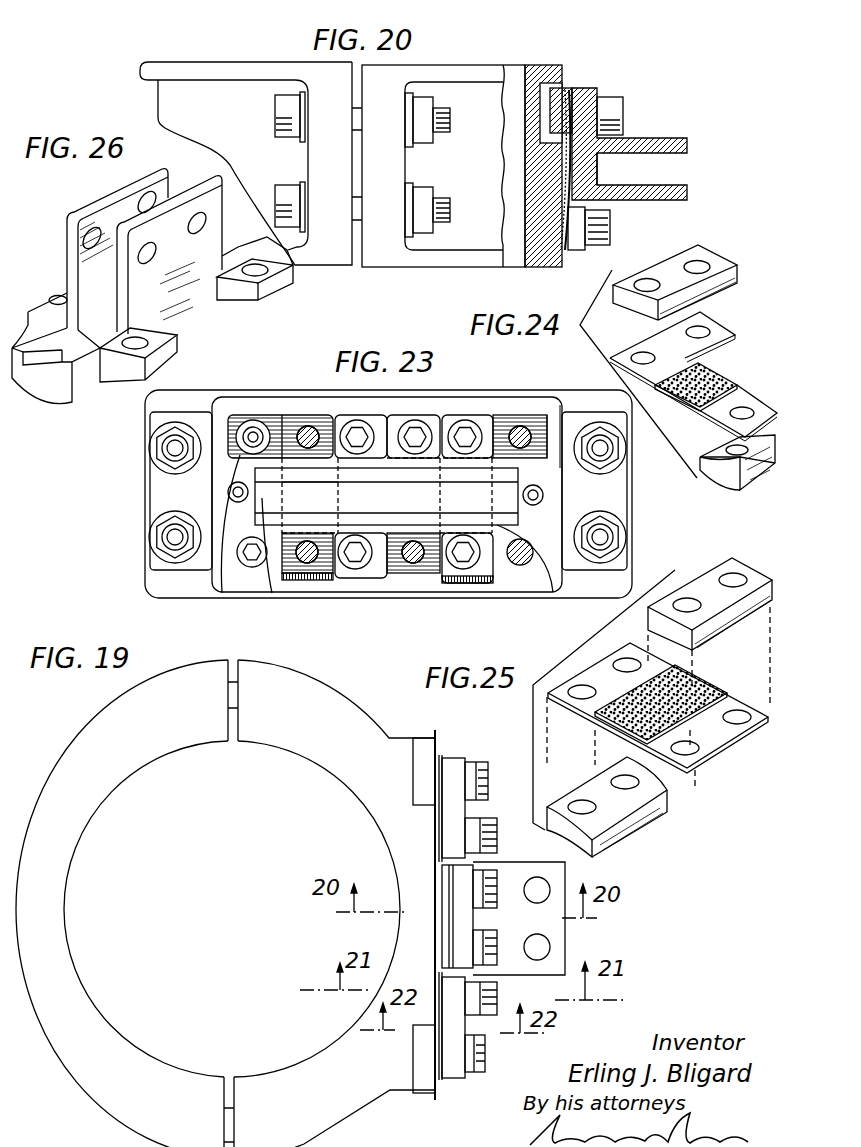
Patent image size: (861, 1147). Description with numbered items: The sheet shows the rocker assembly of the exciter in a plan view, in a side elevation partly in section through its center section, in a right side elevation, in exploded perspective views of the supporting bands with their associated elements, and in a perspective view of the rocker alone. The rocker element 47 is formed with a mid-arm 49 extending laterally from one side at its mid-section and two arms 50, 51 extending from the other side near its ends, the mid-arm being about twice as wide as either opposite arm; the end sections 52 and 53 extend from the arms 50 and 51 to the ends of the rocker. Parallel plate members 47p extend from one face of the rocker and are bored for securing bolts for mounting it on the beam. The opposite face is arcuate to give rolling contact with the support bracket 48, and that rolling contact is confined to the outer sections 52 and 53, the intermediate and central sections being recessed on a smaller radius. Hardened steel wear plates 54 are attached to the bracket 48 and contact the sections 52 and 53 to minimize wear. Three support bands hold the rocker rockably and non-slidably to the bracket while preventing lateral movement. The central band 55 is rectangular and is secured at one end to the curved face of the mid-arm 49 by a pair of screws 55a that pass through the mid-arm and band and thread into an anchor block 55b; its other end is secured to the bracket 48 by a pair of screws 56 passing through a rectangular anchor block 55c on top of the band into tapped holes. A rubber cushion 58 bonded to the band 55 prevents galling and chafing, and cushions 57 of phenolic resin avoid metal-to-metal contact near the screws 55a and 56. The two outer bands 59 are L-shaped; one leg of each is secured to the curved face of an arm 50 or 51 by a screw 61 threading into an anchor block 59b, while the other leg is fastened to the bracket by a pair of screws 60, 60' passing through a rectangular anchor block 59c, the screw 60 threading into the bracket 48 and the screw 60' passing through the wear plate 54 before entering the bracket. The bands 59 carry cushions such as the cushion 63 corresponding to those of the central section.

In FIG. 26, the rocker element 47 is at (121, 251).
In FIG. 23, the rocker element 47 is at (386, 495).
In FIG. 26, the parallel plate members 47p is at (133, 215).
In FIG. 20, the support bracket 48 is at (458, 66).
In FIG. 23, the support bracket 48 is at (152, 584).
In FIG. 19, the support bracket 48 is at (372, 740).
In FIG. 20, the mid-arm 49 is at (600, 90).
In FIG. 26, the mid-arm 49 is at (45, 298).
In FIG. 23, the mid-arm 49 is at (380, 462).
In FIG. 19, the mid-arm 49 is at (460, 886).
In FIG. 26, the arm 50 is at (177, 347).
In FIG. 23, the arm 50 is at (272, 593).
In FIG. 26, the arm 51 is at (270, 288).
In FIG. 23, the arm 51 is at (483, 572).
In FIG. 26, the end section 52 is at (86, 394).
In FIG. 23, the end section 52 is at (223, 593).
In FIG. 26, the end section 53 is at (280, 250).
In FIG. 23, the end section 53 is at (555, 588).
In FIG. 23, the wear plate 54 is at (218, 403).
In FIG. 19, the wear plate 54 is at (423, 753).
In FIG. 20, the central support band 55 is at (568, 130).
In FIG. 23, the central support band 55 is at (412, 424).
In FIG. 25, the central support band 55 is at (595, 703).
In FIG. 19, the central support band 55 is at (452, 917).
In FIG. 20, the screws 55a is at (618, 113).
In FIG. 23, the screws 55a is at (360, 424).
In FIG. 20, the anchor block 55b is at (558, 90).
In FIG. 25, the anchor block 55b is at (625, 822).
In FIG. 20, the rectangular anchor block 55c is at (578, 223).
In FIG. 23, the rectangular anchor block 55c is at (380, 560).
In FIG. 25, the rectangular anchor block 55c is at (738, 572).
In FIG. 20, the screws 56 is at (610, 233).
In FIG. 23, the screws 56 is at (413, 556).
In FIG. 20, the cushions 57 is at (573, 120).
In FIG. 20, the cushion 58 is at (573, 163).
In FIG. 25, the cushion 58 is at (698, 690).
In FIG. 23, the outer support band 59 is at (288, 422).
In FIG. 24, the outer support band 59 is at (715, 327).
In FIG. 19, the outer support band 59 is at (448, 760).
In FIG. 24, the anchor block 59b is at (730, 478).
In FIG. 23, the rectangular anchor block 59c is at (240, 455).
In FIG. 24, the rectangular anchor block 59c is at (725, 262).
In FIG. 23, the screw 60 is at (403, 415).
In FIG. 23, the screw 60' is at (417, 407).
In FIG. 23, the screw 61 is at (305, 578).
In FIG. 24, the cushion 63 is at (718, 385).